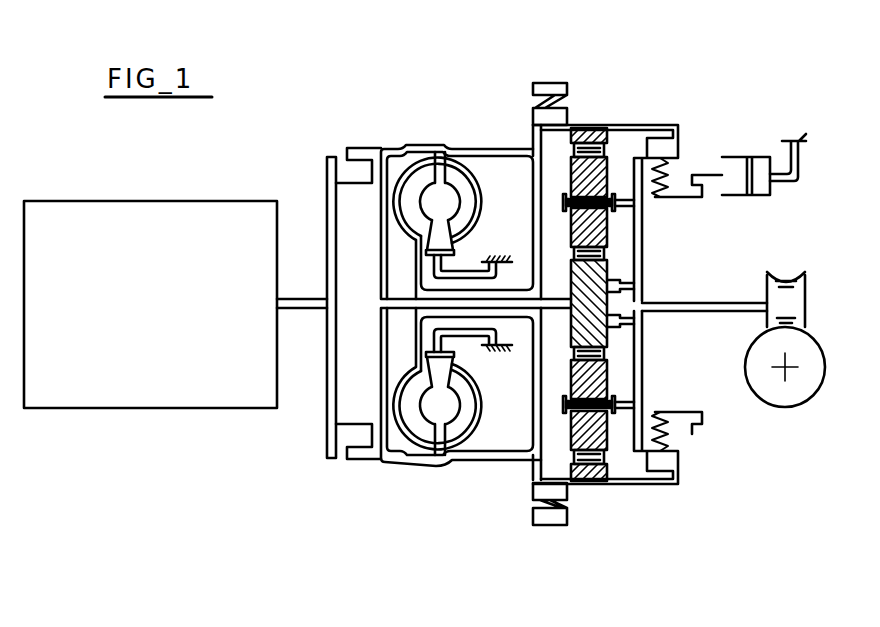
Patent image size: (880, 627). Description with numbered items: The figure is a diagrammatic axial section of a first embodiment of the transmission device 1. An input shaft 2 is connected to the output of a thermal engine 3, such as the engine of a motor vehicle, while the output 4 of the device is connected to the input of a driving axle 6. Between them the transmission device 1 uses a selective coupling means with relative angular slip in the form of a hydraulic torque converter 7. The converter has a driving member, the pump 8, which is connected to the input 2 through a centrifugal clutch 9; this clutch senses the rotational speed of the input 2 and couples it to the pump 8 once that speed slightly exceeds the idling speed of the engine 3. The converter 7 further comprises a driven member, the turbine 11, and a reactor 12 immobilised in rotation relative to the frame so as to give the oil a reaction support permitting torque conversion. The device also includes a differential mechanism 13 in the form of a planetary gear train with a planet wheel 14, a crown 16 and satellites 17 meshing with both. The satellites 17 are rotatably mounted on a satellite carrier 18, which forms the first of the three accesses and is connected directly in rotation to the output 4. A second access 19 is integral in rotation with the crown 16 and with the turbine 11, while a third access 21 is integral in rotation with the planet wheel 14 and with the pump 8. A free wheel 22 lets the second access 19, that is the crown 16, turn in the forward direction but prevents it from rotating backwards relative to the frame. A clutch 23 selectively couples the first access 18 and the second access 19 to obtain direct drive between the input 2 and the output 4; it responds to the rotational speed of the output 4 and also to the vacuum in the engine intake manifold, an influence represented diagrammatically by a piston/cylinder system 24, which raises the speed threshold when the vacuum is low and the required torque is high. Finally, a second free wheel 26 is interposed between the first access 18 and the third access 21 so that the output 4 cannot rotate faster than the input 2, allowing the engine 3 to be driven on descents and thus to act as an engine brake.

The transmission device 1 is at (493, 522).
The input shaft 2 is at (302, 298).
The thermal engine 3 is at (160, 410).
The output 4 is at (733, 313).
The driving axle 6 is at (790, 410).
The hydraulic torque converter 7 is at (438, 347).
The pump 8 is at (470, 438).
The centrifugal clutch 9 is at (345, 474).
The turbine 11 is at (408, 452).
The reactor 12 is at (453, 377).
The differential mechanism 13 is at (596, 496).
The planet wheel 14 is at (593, 272).
The crown 16 is at (597, 128).
The satellites 17 is at (607, 220).
The satellite carrier 18 is at (647, 277).
The second access 19 is at (532, 176).
The third access 21 is at (551, 298).
The free wheel 22 is at (549, 527).
The clutch 23 is at (689, 470).
The piston/cylinder system 24 is at (752, 157).
The second free wheel 26 is at (619, 338).